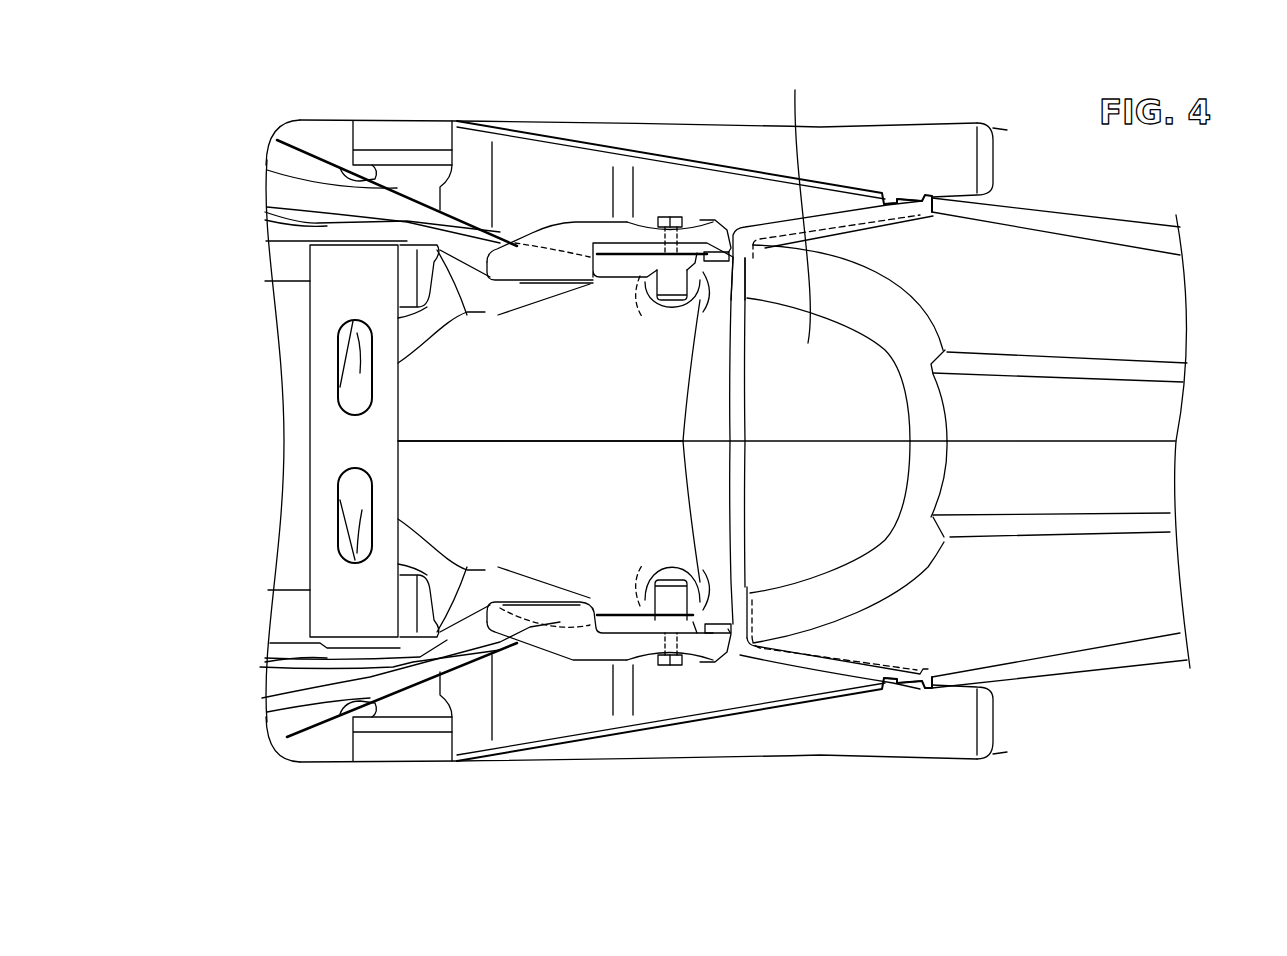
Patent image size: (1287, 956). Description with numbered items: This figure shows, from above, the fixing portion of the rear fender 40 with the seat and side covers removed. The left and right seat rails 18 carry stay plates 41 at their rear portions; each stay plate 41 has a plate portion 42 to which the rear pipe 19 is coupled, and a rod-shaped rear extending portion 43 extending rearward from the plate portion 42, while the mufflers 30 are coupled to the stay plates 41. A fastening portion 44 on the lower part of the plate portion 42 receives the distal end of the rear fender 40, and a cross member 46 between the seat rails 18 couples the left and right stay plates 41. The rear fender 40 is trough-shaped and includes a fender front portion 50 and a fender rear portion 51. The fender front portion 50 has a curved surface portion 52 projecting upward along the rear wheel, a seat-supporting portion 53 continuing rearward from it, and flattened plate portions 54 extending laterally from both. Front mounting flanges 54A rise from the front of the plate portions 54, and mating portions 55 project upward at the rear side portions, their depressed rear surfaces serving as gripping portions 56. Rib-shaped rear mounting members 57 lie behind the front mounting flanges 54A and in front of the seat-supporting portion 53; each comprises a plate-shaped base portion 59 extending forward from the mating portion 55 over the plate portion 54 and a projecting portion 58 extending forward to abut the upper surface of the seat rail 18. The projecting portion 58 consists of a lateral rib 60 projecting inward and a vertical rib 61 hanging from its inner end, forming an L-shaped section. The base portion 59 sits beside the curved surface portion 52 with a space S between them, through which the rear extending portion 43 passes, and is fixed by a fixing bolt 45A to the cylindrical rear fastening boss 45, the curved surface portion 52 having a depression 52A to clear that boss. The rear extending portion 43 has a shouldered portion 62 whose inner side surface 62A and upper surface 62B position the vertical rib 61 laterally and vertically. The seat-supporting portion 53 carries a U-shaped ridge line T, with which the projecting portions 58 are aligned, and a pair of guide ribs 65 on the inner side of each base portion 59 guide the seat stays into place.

The seat rail 18 is at (256, 230).
The rear pipe 19 is at (283, 158).
The muffler 30 is at (908, 137).
The rear fender 40 is at (1153, 477).
The stay plate 41 is at (263, 189).
The plate portion 42 is at (287, 210).
The rear extending portion 43 is at (492, 312).
The fastening portion 44 is at (408, 166).
The rear fastening boss 45 is at (662, 292).
The fixing bolt 45A is at (669, 216).
The cross member 46 is at (323, 443).
The fender front portion 50 is at (422, 405).
The fender rear portion 51 is at (1144, 337).
The curved surface portion 52 is at (517, 347).
The depression 52A is at (670, 318).
The seat-supporting portion 53 is at (802, 203).
The plate portion 54 is at (573, 177).
The front mounting flange 54A is at (411, 263).
The mating portion 55 is at (837, 240).
The gripping portion 56 is at (868, 227).
The rear mounting member 57 is at (716, 206).
The projecting portion 58 is at (605, 209).
The base portion 59 is at (720, 290).
The lateral rib 60 is at (551, 267).
The vertical rib 61 is at (558, 268).
The shouldered portion 62 is at (594, 274).
The inner side surface 62A is at (637, 268).
The upper surface 62B is at (608, 294).
The guide rib 65 is at (643, 260).
The space S is at (746, 226).
The ridge line T is at (928, 565).